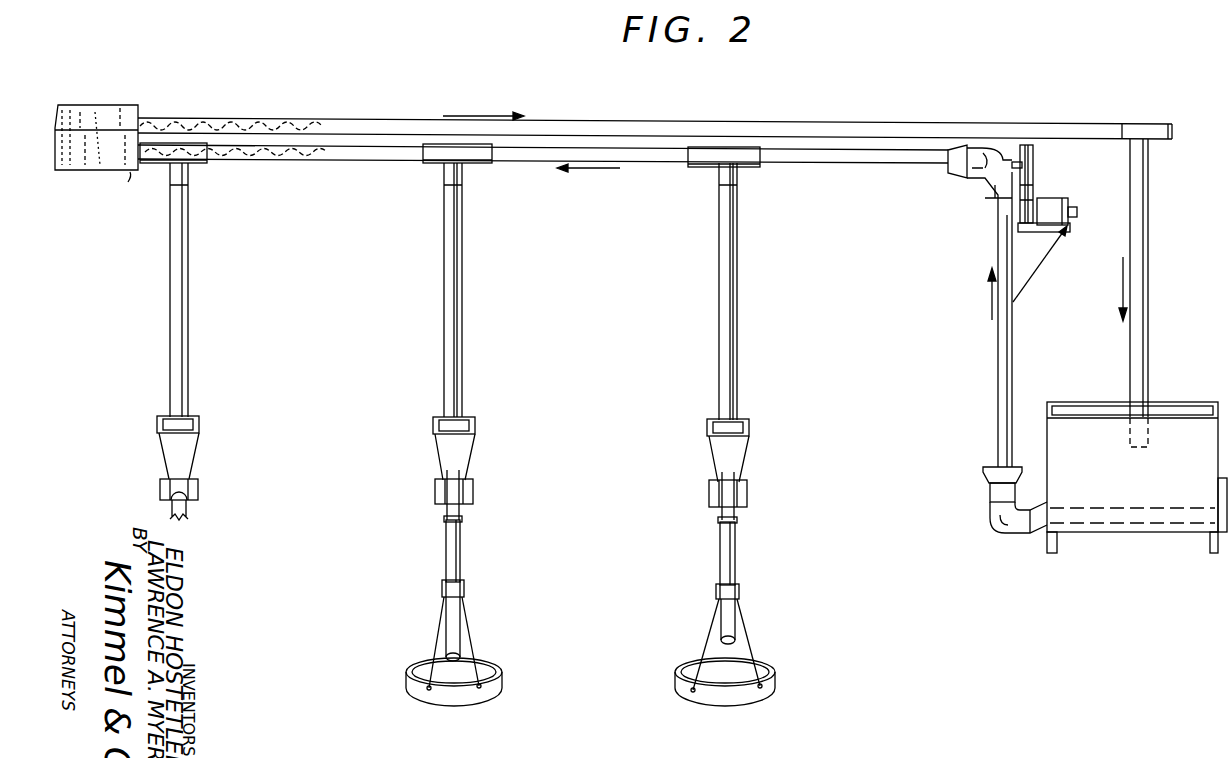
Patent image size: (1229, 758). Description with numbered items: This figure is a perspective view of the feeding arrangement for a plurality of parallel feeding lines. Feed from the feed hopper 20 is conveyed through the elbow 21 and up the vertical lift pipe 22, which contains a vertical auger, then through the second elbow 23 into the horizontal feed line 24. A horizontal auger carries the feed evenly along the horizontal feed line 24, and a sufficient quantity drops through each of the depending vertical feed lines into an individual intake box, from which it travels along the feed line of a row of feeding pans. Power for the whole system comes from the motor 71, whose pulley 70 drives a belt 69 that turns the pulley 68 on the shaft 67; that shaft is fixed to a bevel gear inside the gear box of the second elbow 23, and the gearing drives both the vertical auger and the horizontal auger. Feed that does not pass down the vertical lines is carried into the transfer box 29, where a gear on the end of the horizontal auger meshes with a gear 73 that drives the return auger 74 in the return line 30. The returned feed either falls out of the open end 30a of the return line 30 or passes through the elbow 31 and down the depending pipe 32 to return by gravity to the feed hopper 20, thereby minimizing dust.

The feed hopper 20 is at (1183, 427).
The elbow 21 is at (1010, 534).
The vertical lift pipe 22 is at (999, 367).
The second elbow 23 is at (983, 182).
The horizontal feed line 24 is at (850, 165).
The transfer box 29 is at (135, 112).
The return line 30 is at (685, 125).
The open end 30a is at (1173, 140).
The elbow 31 is at (1138, 132).
The depending pipe 32 is at (1148, 307).
The shaft 67 is at (1021, 143).
The pulley 68 is at (1034, 178).
The belt 69 is at (1033, 191).
The pulley 70 is at (1017, 233).
The motor 71 is at (1061, 230).
The gear 73 is at (147, 128).
The return auger 74 is at (205, 121).